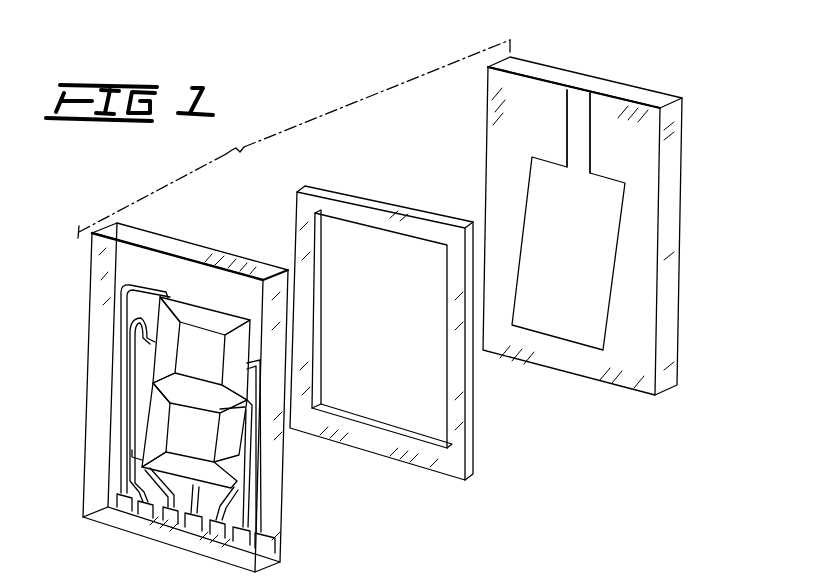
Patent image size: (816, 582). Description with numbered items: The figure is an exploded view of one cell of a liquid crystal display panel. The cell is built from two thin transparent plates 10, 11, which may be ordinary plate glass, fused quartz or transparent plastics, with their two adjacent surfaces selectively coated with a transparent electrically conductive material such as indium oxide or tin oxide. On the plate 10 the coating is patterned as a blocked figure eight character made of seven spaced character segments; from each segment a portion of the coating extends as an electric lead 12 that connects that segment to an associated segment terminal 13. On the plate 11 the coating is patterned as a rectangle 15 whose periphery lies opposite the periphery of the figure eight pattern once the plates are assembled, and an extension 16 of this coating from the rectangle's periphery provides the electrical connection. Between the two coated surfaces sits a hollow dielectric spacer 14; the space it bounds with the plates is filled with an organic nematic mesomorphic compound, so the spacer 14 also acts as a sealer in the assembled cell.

The transparent plate 10 is at (100, 258).
The transparent plate 11 is at (650, 182).
The electric lead 12 is at (115, 336).
The segment terminal 13 is at (192, 526).
The dielectric spacer 14 is at (362, 202).
The rectangle 15 is at (595, 296).
The extension 16 is at (580, 100).